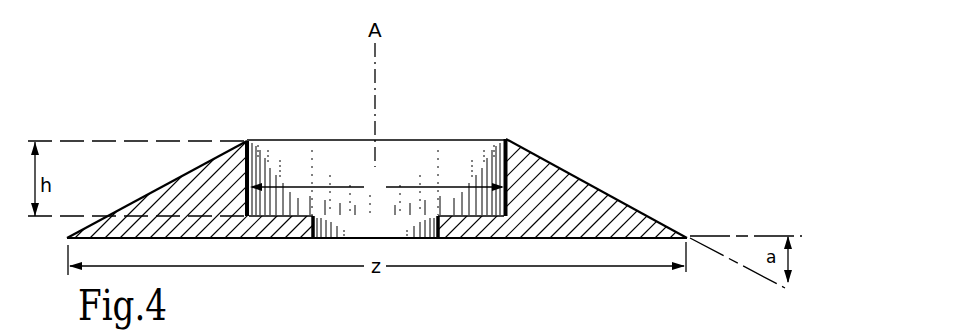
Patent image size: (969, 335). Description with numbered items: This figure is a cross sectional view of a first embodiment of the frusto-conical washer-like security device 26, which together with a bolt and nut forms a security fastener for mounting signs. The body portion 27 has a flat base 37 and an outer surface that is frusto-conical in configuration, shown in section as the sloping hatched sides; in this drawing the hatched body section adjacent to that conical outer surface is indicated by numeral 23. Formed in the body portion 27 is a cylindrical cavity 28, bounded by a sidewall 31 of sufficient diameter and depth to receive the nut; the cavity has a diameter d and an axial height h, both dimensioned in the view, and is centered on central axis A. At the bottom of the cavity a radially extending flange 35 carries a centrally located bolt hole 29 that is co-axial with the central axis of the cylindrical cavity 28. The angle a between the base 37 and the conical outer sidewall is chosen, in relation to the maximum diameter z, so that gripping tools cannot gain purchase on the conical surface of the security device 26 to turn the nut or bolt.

The body of the damping element 23 is at (613, 196).
The security device 26 is at (680, 134).
The body portion 27 is at (562, 178).
The cylindrical cavity 28 is at (456, 163).
The bolt hole 29 is at (413, 240).
The sidewall 31 is at (266, 152).
The radially extending flange 35 is at (280, 230).
The flat base 37 is at (552, 240).